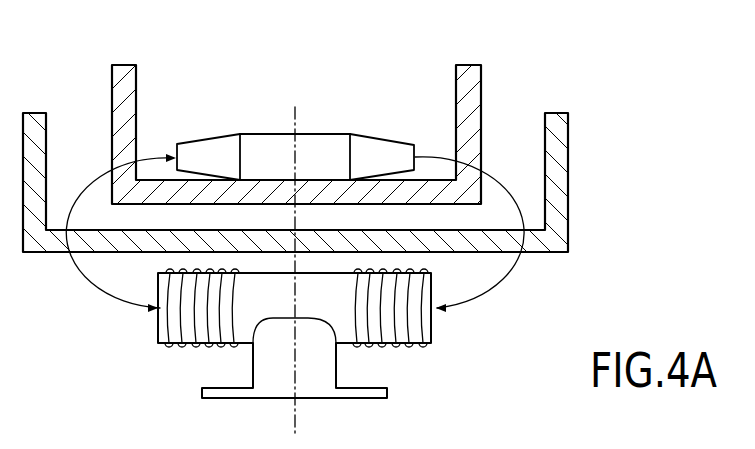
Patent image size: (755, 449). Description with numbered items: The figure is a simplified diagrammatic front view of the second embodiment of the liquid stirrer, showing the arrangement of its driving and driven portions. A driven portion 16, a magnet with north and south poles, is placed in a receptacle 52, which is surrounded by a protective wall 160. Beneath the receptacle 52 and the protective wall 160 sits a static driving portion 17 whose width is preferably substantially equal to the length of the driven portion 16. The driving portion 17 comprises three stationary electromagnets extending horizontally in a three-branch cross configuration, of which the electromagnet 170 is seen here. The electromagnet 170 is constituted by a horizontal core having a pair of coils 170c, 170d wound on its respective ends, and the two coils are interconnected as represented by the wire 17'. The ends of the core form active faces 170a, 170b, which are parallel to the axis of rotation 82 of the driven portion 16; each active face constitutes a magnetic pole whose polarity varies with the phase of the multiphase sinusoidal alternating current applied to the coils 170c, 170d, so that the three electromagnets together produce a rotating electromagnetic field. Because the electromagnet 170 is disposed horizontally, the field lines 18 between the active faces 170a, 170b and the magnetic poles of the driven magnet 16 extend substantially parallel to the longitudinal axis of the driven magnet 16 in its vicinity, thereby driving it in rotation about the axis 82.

The receptacle 52 is at (478, 80).
The axis of rotation 82 is at (295, 108).
The driven portion 16 is at (348, 130).
The field lines 18 is at (92, 280).
The protective wall 160 is at (557, 172).
The static driving portion 17 is at (299, 355).
The wire 17' is at (313, 351).
The electromagnet 170 is at (293, 357).
The active face 170a is at (158, 320).
The active face 170b is at (436, 319).
The coil 170c is at (185, 350).
The coil 170d is at (392, 348).